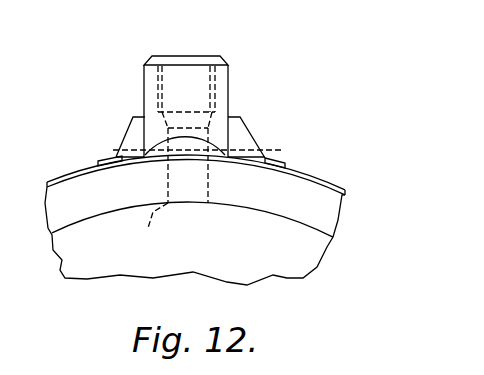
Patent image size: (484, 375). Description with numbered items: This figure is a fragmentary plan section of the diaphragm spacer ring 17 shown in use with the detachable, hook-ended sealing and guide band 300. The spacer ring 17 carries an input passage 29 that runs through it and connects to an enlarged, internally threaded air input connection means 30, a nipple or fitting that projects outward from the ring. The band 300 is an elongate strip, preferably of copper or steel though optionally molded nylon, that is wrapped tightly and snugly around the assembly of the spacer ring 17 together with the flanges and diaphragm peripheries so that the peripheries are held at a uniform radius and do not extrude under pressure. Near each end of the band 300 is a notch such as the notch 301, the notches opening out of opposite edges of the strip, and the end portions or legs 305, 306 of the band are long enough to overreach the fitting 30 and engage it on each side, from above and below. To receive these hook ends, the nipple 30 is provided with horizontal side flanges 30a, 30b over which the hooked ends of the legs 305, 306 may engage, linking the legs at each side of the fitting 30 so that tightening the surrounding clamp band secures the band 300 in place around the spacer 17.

The spacer ring 17 is at (58, 258).
The input passage 29 is at (146, 230).
The air input connection means 30 is at (198, 82).
The horizontal side flange 30a is at (130, 128).
The horizontal side flange 30b is at (233, 123).
The sealing and guide band 300 is at (328, 178).
The notch 301 is at (225, 140).
The leg 305 is at (108, 160).
The leg 306 is at (267, 168).